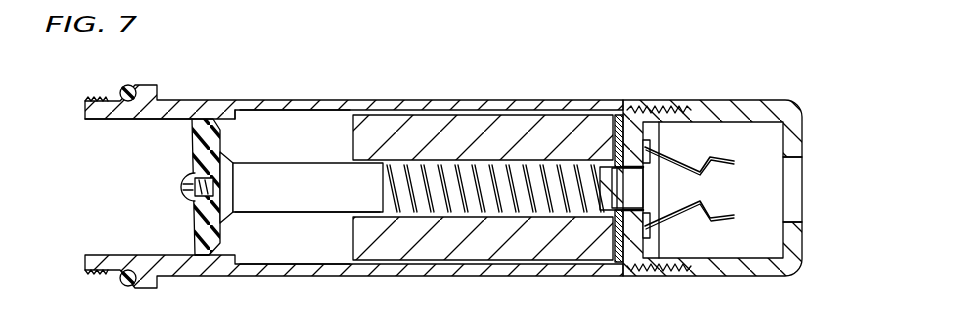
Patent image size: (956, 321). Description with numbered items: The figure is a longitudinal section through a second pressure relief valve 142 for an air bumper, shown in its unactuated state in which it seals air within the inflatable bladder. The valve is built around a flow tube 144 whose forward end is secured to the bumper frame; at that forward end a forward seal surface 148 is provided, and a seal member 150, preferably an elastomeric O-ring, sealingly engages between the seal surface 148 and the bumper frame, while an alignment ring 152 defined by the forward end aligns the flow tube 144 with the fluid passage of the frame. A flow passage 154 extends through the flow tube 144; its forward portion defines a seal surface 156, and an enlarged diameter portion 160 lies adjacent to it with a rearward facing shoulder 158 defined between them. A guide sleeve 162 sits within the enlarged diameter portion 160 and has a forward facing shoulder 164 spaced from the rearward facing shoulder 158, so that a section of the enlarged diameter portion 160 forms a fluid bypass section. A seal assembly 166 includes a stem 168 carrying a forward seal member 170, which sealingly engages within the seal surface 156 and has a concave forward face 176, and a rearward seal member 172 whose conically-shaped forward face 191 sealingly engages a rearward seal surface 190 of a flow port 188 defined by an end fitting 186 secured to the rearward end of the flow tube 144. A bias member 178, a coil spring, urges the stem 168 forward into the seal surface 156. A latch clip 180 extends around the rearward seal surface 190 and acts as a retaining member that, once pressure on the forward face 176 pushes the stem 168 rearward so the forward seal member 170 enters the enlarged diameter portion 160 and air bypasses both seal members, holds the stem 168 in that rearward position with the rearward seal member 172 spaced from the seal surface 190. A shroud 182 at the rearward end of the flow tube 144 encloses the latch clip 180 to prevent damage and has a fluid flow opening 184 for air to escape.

The pressure relief valve 142 is at (99, 85).
The flow tube 144 is at (402, 272).
The forward seal surface 148 is at (129, 96).
The seal member 150 is at (128, 284).
The alignment ring 152 is at (96, 273).
The flow passage 154 is at (350, 113).
The seal surface 156 is at (185, 119).
The rearward facing shoulder 158 is at (236, 113).
The enlarged diameter portion 160 is at (291, 112).
The guide sleeve 162 is at (522, 120).
The forward facing shoulder 164 is at (352, 262).
The seal assembly 166 is at (265, 214).
The stem 168 is at (338, 203).
The forward seal member 170 is at (195, 256).
The rearward seal member 172 is at (685, 217).
The forward face 176 is at (192, 227).
The bias member 178 is at (463, 214).
The latch clip 180 is at (698, 163).
The shroud 182 is at (795, 135).
The fluid flow opening 184 is at (793, 160).
The end fitting 186 is at (618, 232).
The flow port 188 is at (626, 188).
The rearward seal surface 190 is at (649, 220).
The conically-shaped forward face 191 is at (646, 150).